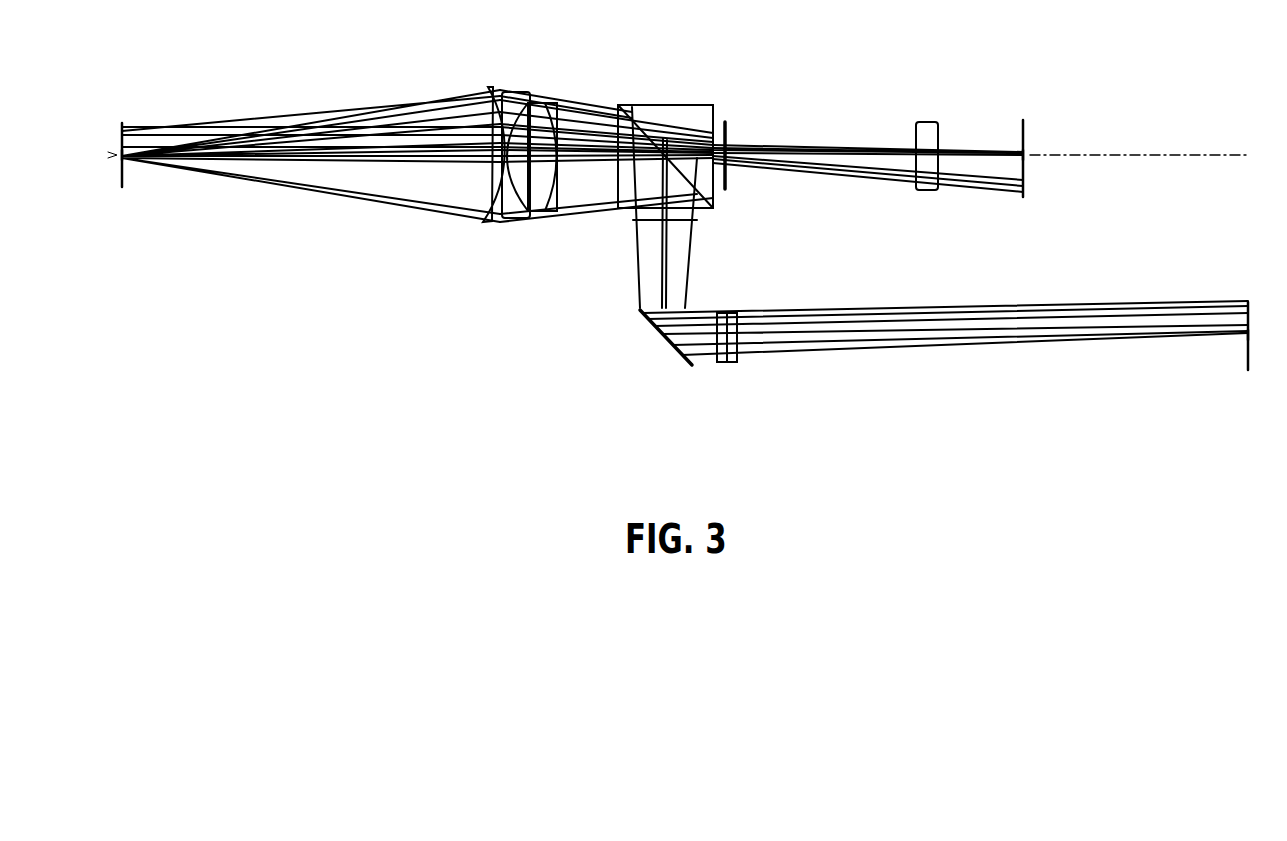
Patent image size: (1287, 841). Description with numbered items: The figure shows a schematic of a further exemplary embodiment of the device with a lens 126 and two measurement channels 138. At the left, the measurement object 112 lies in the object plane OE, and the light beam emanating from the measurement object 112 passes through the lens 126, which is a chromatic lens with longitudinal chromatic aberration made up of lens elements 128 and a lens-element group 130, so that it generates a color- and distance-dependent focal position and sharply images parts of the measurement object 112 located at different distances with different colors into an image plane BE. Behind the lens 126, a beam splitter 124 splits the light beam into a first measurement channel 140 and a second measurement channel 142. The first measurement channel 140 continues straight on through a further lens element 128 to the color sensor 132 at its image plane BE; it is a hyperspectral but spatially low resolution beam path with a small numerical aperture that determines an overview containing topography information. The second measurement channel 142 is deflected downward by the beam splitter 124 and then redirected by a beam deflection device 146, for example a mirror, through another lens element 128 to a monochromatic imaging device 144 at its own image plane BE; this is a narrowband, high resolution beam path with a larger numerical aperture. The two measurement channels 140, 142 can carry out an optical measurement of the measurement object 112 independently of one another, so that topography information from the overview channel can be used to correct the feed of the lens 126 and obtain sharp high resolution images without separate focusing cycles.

The measurement object 112 is at (122, 190).
The beam splitter 124 is at (668, 104).
The lens 126 is at (735, 227).
The lens element 128 is at (927, 122).
The lens-element group 130 is at (505, 90).
The color sensor 132 is at (1022, 198).
The measurement channel 138 is at (685, 252).
The first measurement channel 140 is at (792, 142).
The second measurement channel 142 is at (852, 358).
The monochromatic imaging device 144 is at (1247, 300).
The beam deflection device 146 is at (644, 318).
The object plane OE is at (122, 120).
The image plane BE is at (1022, 120).